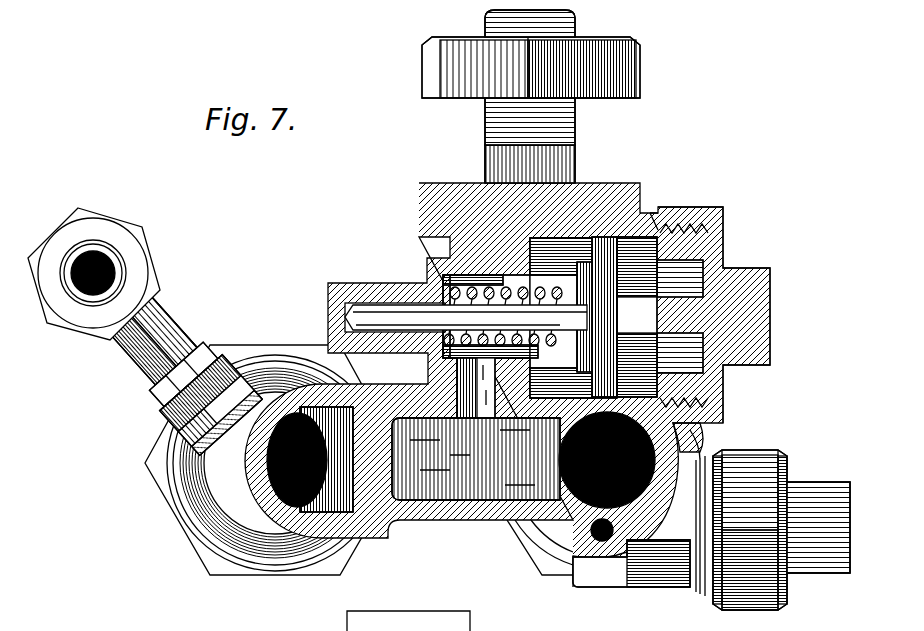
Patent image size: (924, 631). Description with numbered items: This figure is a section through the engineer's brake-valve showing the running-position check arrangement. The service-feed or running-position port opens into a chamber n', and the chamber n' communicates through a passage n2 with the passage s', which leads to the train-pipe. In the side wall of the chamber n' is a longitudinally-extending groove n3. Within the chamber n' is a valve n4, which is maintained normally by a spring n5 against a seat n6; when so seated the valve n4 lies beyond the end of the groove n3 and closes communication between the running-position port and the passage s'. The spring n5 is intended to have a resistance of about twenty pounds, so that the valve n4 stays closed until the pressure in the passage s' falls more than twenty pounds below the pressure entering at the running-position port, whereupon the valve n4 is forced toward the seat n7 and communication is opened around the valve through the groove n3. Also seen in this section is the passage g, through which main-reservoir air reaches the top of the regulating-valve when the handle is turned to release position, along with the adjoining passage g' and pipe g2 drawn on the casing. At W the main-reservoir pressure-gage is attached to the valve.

The main-reservoir pressure-gage attachment W is at (150, 252).
The chamber n' is at (655, 301).
The passage n2 is at (473, 381).
The longitudinally-extending groove n3 is at (562, 398).
The valve n4 is at (611, 364).
The spring n5 is at (563, 292).
The seat n6 is at (617, 291).
The seat n7 is at (540, 288).
The passage g is at (310, 459).
The coupling nut g' is at (617, 581).
The pipe g2 is at (818, 549).
The passage s' is at (588, 507).